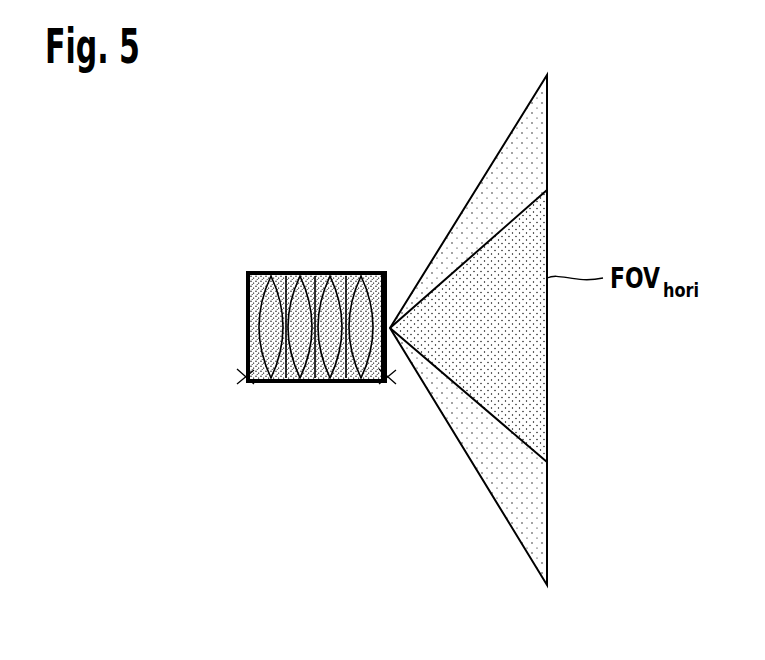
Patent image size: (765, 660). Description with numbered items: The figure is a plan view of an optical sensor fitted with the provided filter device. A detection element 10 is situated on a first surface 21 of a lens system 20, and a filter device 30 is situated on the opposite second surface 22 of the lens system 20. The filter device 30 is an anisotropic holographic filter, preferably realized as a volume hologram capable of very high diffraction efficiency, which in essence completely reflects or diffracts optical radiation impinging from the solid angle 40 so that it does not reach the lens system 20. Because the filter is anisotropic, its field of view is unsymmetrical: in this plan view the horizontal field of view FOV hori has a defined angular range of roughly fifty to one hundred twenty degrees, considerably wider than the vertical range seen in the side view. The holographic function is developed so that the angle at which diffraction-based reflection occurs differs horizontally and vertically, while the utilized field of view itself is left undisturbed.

The detection element 10 is at (247, 271).
The lens system 20 is at (313, 384).
The first surface 21 is at (246, 385).
The second surface 22 is at (387, 385).
The filter device 30 is at (383, 271).
The solid angle 40 is at (547, 140).